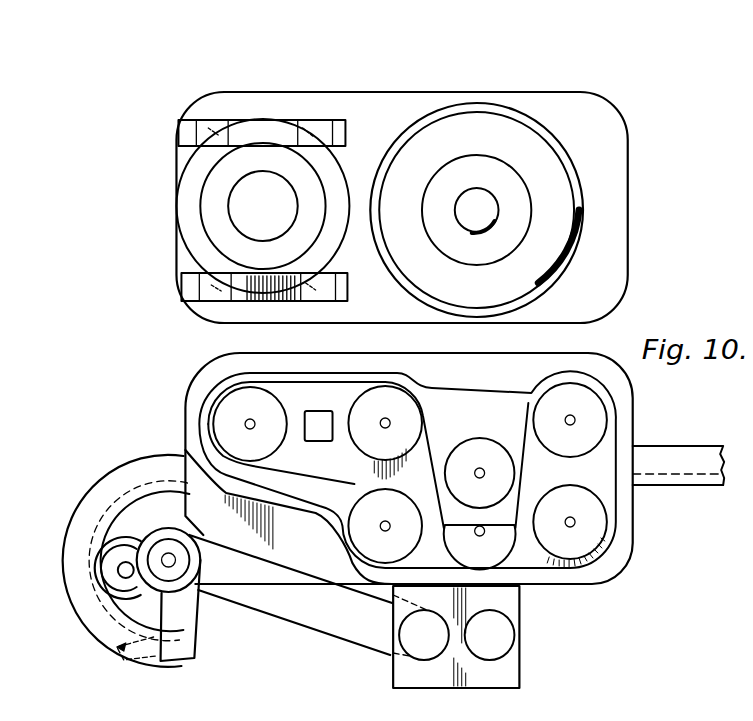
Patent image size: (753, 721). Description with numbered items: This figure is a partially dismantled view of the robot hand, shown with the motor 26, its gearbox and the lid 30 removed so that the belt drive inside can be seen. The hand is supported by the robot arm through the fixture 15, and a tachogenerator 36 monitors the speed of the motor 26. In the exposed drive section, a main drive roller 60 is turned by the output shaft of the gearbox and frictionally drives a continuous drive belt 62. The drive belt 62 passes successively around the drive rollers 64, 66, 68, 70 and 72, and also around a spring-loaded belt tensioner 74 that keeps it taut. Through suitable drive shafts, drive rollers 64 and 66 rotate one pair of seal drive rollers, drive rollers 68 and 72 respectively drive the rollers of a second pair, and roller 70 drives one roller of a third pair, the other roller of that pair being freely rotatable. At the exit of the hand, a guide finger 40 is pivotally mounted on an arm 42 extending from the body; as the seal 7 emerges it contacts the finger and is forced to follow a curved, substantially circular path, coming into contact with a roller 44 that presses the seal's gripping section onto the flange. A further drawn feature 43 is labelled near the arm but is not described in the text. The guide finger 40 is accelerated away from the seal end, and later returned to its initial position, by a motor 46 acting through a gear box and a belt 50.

The seal 7 is at (690, 470).
The fixture 15 is at (278, 113).
The motor 26 is at (408, 143).
The lid 30 is at (613, 208).
The tachogenerator 36 is at (490, 197).
The guide finger 40 is at (185, 646).
The arm 42 is at (105, 547).
The slot 43 is at (118, 655).
The roller 44 is at (98, 595).
The motor 46 is at (500, 630).
The belt 50 is at (270, 616).
The main drive roller 60 is at (488, 450).
The continuous drive belt 62 is at (280, 383).
The drive roller 64 is at (595, 420).
The drive roller 66 is at (595, 520).
The drive roller 68 is at (357, 523).
The drive roller 70 is at (222, 410).
The drive roller 72 is at (402, 402).
The spring-loaded belt tensioner 74 is at (503, 540).